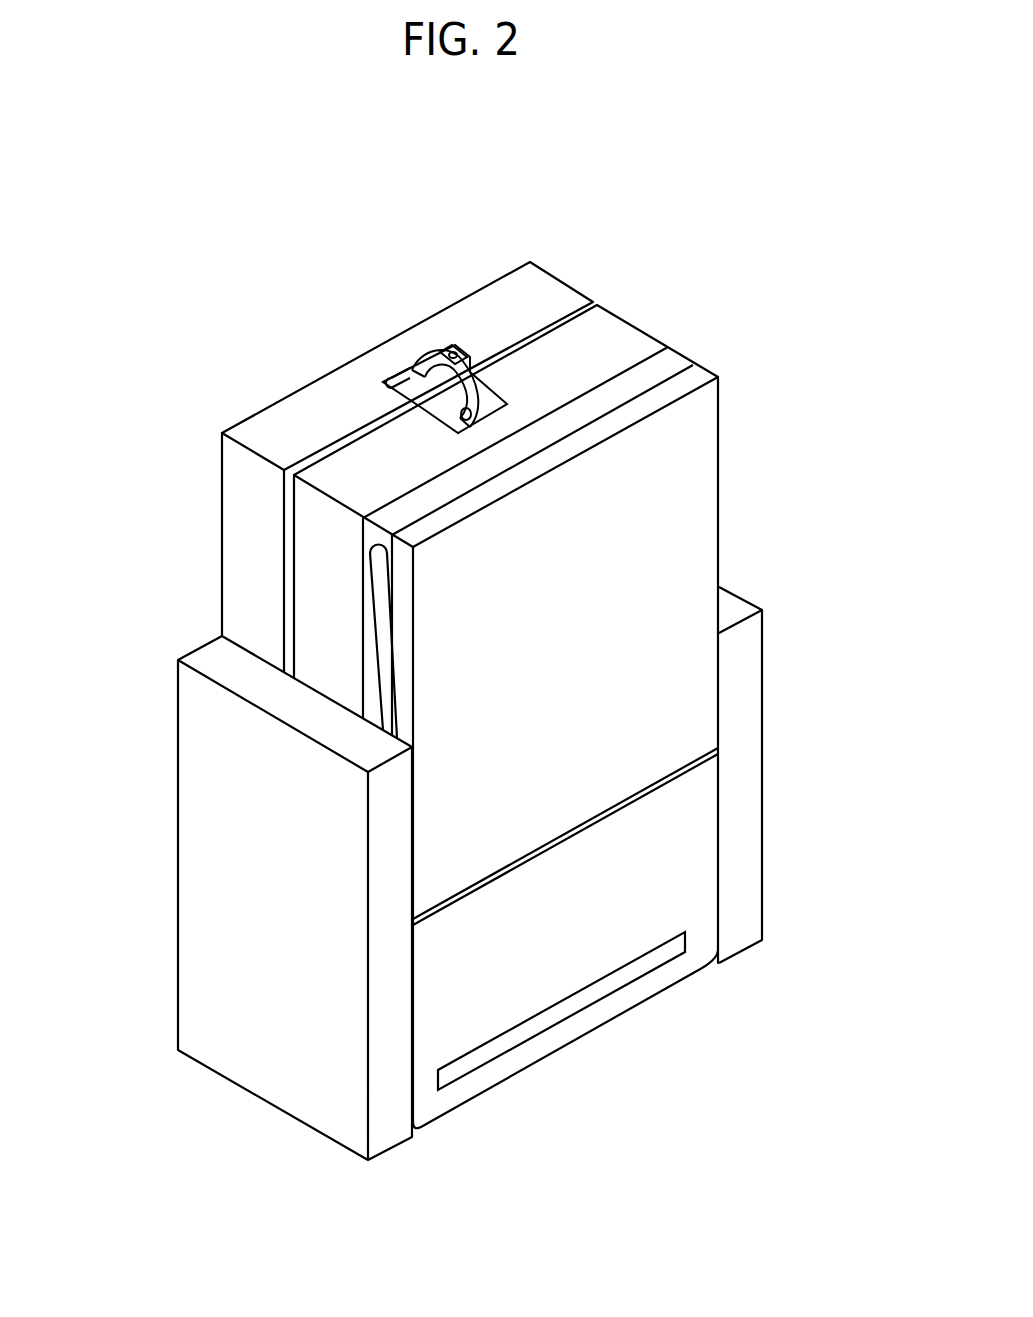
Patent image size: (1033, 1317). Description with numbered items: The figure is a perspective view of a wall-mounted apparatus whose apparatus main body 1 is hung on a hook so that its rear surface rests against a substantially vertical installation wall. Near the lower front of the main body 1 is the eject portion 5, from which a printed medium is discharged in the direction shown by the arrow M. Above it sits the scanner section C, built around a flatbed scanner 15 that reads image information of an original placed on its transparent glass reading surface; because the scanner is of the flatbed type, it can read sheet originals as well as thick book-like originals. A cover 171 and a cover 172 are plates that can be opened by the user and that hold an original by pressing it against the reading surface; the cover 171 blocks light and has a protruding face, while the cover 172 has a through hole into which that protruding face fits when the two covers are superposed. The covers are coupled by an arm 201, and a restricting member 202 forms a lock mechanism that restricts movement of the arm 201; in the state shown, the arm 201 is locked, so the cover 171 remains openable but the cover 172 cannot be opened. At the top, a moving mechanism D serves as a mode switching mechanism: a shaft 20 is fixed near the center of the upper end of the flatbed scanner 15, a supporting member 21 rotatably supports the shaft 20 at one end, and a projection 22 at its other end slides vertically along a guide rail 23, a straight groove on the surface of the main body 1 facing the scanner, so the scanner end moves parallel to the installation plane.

The apparatus main body 1 is at (441, 278).
The eject portion 5 is at (648, 966).
The flatbed scanner 15 is at (633, 340).
The shaft 20 is at (440, 410).
The supporting member 21 is at (470, 391).
The projection 22 is at (450, 358).
The guide rail 23 is at (452, 352).
The cover 171 is at (690, 496).
The cover 172 is at (650, 384).
The arm 201 is at (380, 672).
The restricting member 202 is at (730, 737).
The moving mechanism D is at (398, 356).
The flatbed scanner section C is at (690, 342).
The discharge direction M is at (562, 1010).